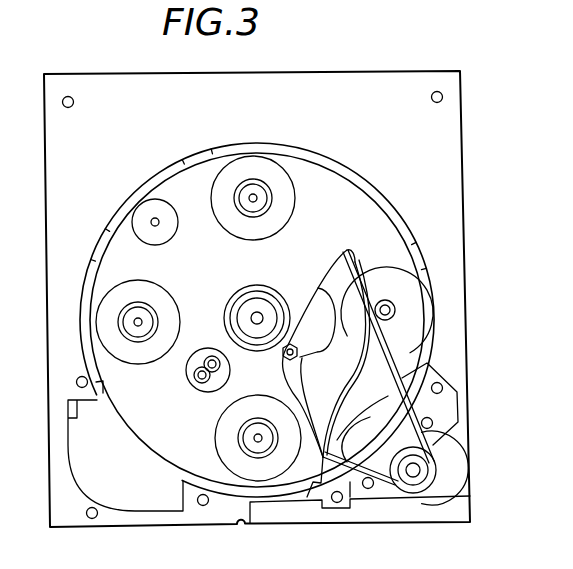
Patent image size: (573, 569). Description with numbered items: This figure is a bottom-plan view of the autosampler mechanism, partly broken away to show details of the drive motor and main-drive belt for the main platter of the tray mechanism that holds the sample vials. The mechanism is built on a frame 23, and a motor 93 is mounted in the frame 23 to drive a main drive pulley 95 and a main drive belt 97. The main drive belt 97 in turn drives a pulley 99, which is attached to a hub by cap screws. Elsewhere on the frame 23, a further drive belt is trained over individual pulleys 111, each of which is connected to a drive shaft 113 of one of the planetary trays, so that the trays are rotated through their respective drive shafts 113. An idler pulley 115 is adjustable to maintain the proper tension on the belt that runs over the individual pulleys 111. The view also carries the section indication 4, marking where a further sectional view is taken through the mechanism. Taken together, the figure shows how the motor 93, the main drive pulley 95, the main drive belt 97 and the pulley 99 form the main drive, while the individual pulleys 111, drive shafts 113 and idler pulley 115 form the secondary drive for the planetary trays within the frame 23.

The frame 23 is at (165, 113).
The individual pulley 111 is at (267, 177).
The drive shaft 113 is at (258, 198).
The idler pulley 115 is at (193, 365).
The section line 4- 4 is at (244, 248).
The pulley 99 is at (342, 382).
The main drive belt 97 is at (398, 388).
The motor 93 is at (440, 450).
The main drive pulley 95 is at (424, 472).